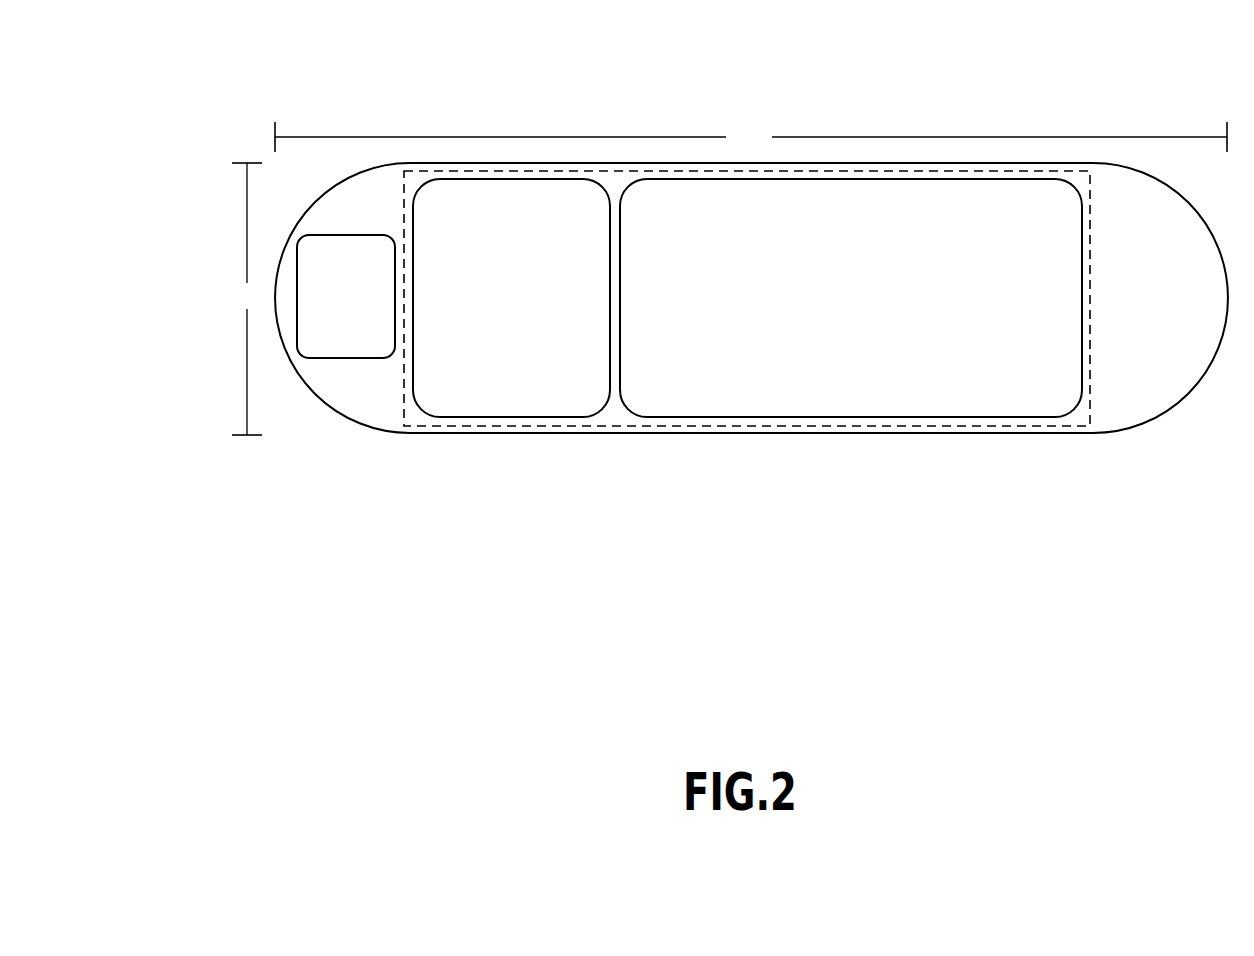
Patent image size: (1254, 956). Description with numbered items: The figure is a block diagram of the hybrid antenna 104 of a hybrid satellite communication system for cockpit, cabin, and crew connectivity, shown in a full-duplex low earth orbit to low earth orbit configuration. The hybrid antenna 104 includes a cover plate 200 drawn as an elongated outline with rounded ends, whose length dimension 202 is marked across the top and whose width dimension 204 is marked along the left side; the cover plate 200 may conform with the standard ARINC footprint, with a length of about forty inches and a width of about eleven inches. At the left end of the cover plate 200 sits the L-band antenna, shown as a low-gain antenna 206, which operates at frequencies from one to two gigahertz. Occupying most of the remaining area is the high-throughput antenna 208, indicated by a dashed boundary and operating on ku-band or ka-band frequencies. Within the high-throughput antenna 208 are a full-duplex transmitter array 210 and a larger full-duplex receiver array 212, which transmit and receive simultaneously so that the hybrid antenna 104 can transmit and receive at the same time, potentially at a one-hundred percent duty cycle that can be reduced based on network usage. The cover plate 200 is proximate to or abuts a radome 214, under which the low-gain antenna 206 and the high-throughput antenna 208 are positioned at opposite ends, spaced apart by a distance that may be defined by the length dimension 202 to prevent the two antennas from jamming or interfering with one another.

The hybrid antenna 104 is at (217, 108).
The cover plate 200 is at (1178, 293).
The length dimension 202 is at (751, 137).
The width dimension 204 is at (246, 299).
The low-gain antenna 206 is at (364, 310).
The high-throughput antenna 208 is at (1091, 249).
The full-duplex transmitter array 210 is at (533, 310).
The full-duplex receiver array 212 is at (871, 310).
The radome 214 is at (1178, 332).